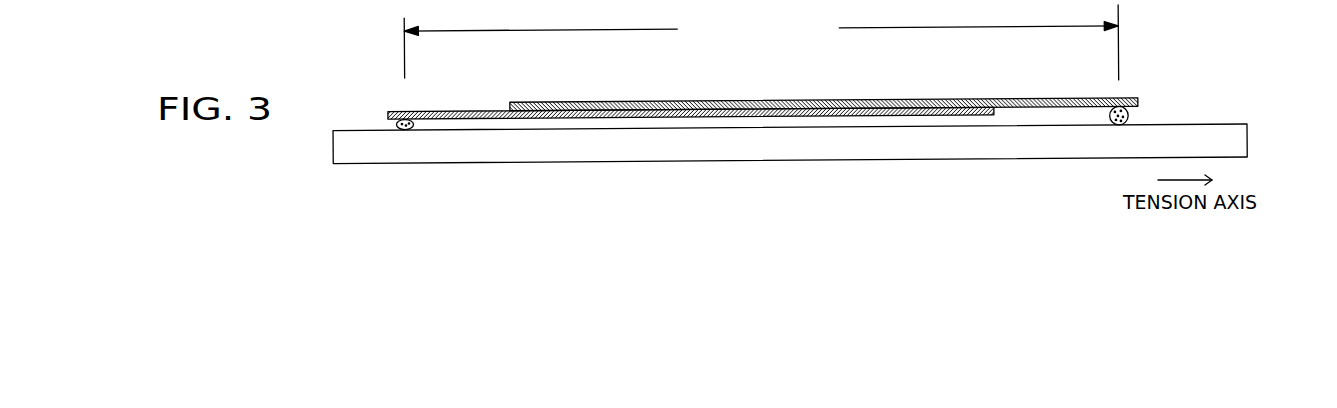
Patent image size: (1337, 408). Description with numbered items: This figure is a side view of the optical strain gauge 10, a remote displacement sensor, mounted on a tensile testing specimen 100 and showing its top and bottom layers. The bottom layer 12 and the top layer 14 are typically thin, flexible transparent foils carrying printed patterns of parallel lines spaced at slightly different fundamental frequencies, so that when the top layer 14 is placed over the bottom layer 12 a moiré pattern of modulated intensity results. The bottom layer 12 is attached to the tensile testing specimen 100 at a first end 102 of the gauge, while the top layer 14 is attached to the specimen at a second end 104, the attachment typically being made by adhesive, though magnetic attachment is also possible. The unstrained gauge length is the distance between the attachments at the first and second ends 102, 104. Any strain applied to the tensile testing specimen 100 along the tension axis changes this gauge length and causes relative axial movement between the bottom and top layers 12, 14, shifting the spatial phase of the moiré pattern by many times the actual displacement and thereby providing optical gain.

The strain gauge 10 is at (1187, 77).
The bottom layer 12 is at (477, 111).
The top layer 14 is at (953, 98).
The tensile testing specimen 100 is at (1230, 128).
The first end 102 is at (407, 130).
The second end 104 is at (1120, 125).